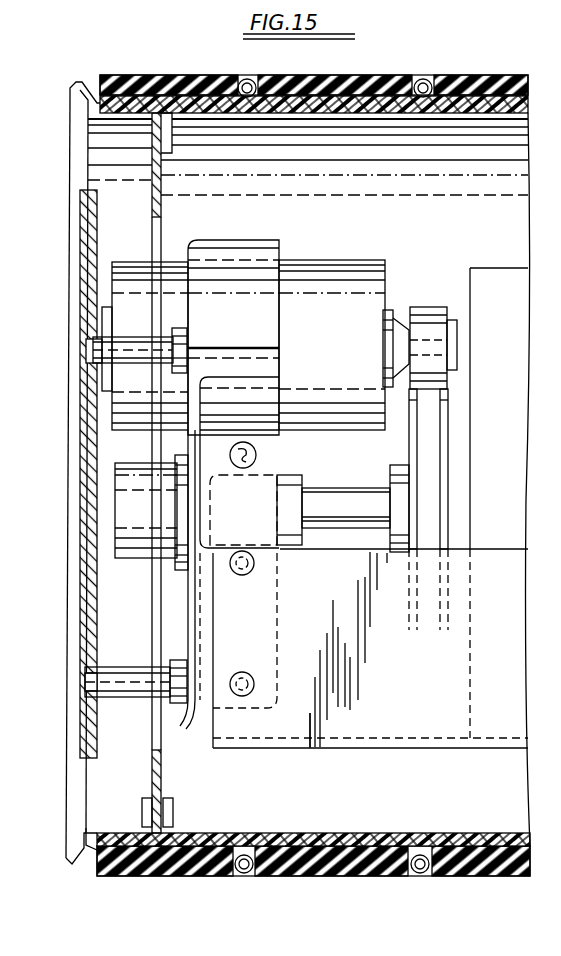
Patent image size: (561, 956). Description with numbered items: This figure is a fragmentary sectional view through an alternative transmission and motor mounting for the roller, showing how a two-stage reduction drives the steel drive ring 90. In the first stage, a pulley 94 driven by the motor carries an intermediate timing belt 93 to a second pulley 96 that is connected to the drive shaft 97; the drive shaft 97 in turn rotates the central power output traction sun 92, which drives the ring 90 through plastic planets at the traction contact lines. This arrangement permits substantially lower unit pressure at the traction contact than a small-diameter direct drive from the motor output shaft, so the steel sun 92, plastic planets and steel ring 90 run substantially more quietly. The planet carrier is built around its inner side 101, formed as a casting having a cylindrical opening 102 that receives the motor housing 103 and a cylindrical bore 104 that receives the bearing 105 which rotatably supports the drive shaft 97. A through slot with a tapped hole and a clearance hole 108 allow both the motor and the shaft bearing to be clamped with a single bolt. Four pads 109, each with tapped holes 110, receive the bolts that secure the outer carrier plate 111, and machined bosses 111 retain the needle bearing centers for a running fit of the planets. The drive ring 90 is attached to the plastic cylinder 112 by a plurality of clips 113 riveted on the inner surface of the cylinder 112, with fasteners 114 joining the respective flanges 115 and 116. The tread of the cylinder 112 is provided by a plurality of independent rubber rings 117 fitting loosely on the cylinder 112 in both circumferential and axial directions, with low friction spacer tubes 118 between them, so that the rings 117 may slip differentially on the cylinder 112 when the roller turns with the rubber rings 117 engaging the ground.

The drive ring 90 is at (98, 832).
The central power output traction sun 92 is at (133, 476).
The intermediate timing belt 93 is at (390, 262).
The pulley 94 is at (412, 308).
The pulley 96 is at (427, 522).
The drive shaft 97 is at (360, 502).
The inner side of the carrier 101 is at (187, 632).
The cylindrical opening 102 is at (250, 268).
The motor housing 103 is at (354, 260).
The cylindrical bore 104 is at (285, 487).
The bearing 105 is at (292, 542).
The clearance hole 108 is at (258, 451).
The pads 109 is at (185, 704).
The tapped holes 110 is at (133, 694).
The outer carrier plate 111 is at (178, 570).
The cylinder 112 is at (393, 833).
The clips 113 is at (248, 834).
The fasteners 114 is at (173, 814).
The flange 115 is at (163, 792).
The flange 116 is at (160, 766).
The rubber rings 117 is at (336, 75).
The low friction spacer tubes 118 is at (423, 79).